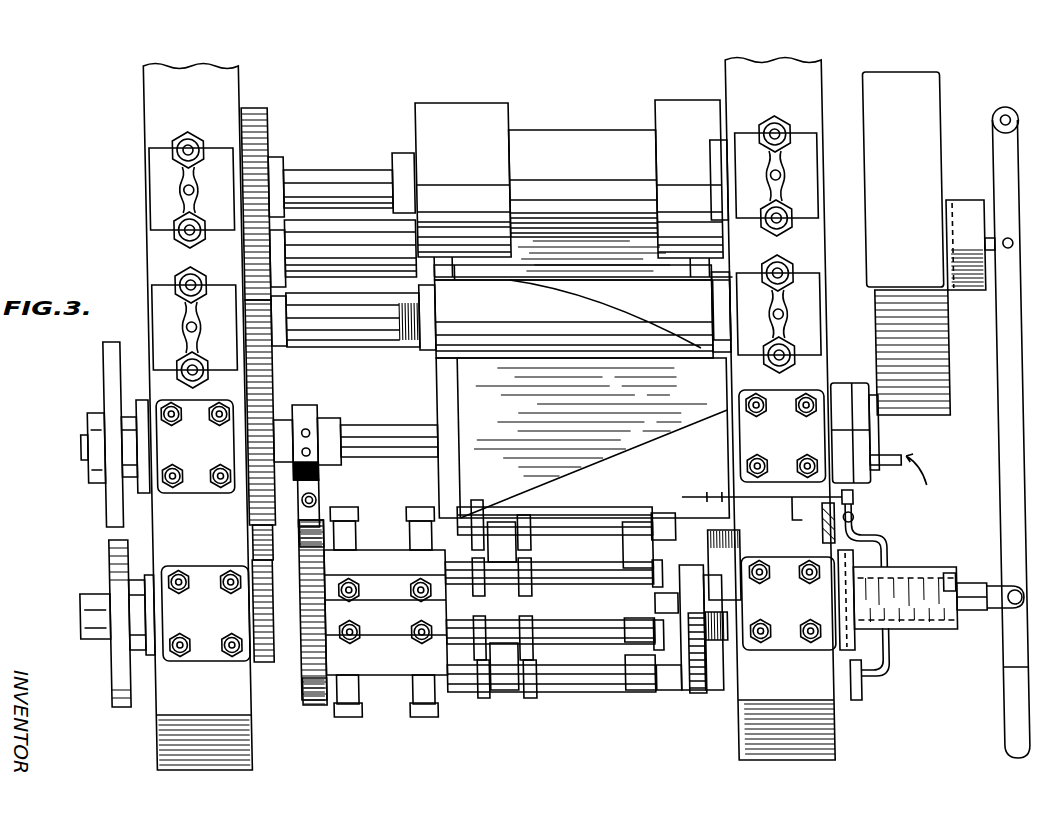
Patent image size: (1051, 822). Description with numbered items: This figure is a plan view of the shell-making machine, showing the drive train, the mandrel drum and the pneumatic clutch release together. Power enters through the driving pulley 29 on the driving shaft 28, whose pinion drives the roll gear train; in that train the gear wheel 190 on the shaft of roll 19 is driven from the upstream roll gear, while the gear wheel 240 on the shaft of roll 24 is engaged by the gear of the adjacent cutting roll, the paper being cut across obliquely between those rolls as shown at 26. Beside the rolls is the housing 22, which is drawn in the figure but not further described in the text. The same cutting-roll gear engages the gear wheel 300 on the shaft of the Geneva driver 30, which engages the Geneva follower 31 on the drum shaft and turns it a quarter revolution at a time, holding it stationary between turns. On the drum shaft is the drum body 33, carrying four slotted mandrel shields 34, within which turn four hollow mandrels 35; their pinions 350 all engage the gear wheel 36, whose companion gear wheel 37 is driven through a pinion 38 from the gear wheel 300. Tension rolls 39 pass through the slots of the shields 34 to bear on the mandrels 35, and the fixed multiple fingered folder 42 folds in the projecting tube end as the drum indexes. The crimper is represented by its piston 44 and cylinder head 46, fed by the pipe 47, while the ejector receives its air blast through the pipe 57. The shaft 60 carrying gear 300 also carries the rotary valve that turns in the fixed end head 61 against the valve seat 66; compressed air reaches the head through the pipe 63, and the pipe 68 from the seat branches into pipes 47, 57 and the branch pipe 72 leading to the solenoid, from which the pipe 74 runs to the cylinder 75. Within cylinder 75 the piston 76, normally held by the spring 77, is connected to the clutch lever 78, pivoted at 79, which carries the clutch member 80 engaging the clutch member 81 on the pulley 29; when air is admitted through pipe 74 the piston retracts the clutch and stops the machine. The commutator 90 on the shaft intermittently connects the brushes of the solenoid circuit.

The roll 19 is at (660, 100).
The gear wheel 190 is at (274, 136).
The driving shaft 28 is at (357, 243).
The driving pulley 29 is at (946, 112).
The pivot 79 is at (1015, 115).
The clutch member 81 is at (962, 197).
The clutch member 80 is at (978, 292).
The gear wheel 240 is at (282, 312).
The roll 24 is at (455, 347).
The gear wheel 300 is at (276, 390).
The commutator 90 is at (318, 412).
The shaft 60 is at (390, 428).
The housing 22 is at (564, 438).
The Geneva driver 30 is at (106, 394).
The oblique cut 26 is at (596, 455).
The valve seat 66 is at (840, 383).
The fixed end head 61 is at (864, 383).
The pipe 63 is at (886, 456).
The clutch lever 78 is at (999, 449).
The pipe 68 is at (852, 494).
The air blast pipe 57 is at (748, 500).
The branch pipe 72 is at (788, 516).
The pipe 74 is at (863, 538).
The mandrel shield 34 is at (590, 614).
The hollow mandrel 35 is at (665, 593).
The pinion 38 is at (249, 532).
The Geneva follower 31 is at (107, 556).
The pinion 350 is at (300, 590).
The gear wheel 37 is at (252, 662).
The gear wheel 36 is at (298, 665).
The drum body 33 is at (389, 640).
The tension roll 39 is at (524, 700).
The multiple fingered folder 42 is at (692, 696).
The piston 44 is at (710, 692).
The cylinder head 46 is at (850, 700).
The pipe 47 is at (886, 550).
The cylinder 75 is at (916, 567).
The spring 77 is at (944, 571).
The piston 76 is at (972, 611).